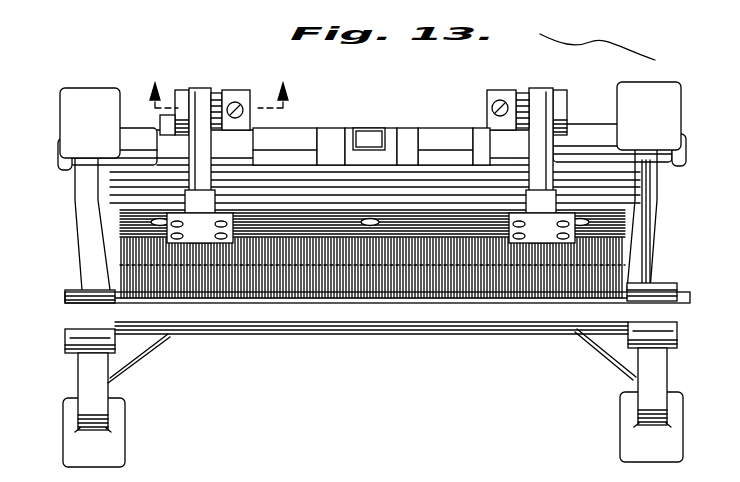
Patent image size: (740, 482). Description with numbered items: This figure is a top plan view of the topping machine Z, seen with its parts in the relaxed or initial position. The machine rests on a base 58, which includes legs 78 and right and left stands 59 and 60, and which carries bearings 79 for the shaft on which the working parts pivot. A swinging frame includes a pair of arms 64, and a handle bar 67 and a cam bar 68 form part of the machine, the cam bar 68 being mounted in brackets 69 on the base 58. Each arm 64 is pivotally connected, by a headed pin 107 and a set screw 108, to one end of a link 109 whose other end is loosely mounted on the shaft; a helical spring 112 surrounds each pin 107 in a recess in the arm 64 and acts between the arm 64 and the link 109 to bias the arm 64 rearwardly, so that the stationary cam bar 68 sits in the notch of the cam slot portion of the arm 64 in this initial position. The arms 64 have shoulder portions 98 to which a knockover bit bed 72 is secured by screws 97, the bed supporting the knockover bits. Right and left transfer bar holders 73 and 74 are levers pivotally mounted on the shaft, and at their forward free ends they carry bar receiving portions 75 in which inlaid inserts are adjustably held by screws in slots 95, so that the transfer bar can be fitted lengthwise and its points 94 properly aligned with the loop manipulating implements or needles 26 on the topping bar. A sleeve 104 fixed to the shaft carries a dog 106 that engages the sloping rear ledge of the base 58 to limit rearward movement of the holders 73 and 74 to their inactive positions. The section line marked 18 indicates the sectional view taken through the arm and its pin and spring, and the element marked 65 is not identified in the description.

The topping machine Z is at (597, 40).
The section line 18 is at (218, 82).
The loop manipulating implements or needles 26 is at (590, 246).
The base 58 is at (146, 357).
The right stand 59 is at (664, 368).
The left stand 60 is at (82, 372).
The arms 64 is at (182, 126).
The end cap 65 is at (64, 156).
The handle bar 67 is at (330, 128).
The cam bar 68 is at (326, 147).
The brackets 69 is at (280, 150).
The knockover bit bed 72 is at (400, 142).
The right transfer bar holder 73 is at (652, 220).
The left transfer bar holder 74 is at (86, 205).
The bar receiving portions 75 is at (68, 340).
The legs 78 is at (73, 96).
The bearings 79 is at (110, 178).
The points 94 is at (300, 296).
The slots 95 is at (442, 333).
The screws 97 is at (165, 244).
The shoulder portions 98 is at (160, 226).
The sleeve 104 is at (350, 130).
The dog 106 is at (368, 130).
The headed pin 107 is at (196, 82).
The set screw 108 is at (236, 104).
The link 109 is at (225, 133).
The helical spring 112 is at (216, 98).